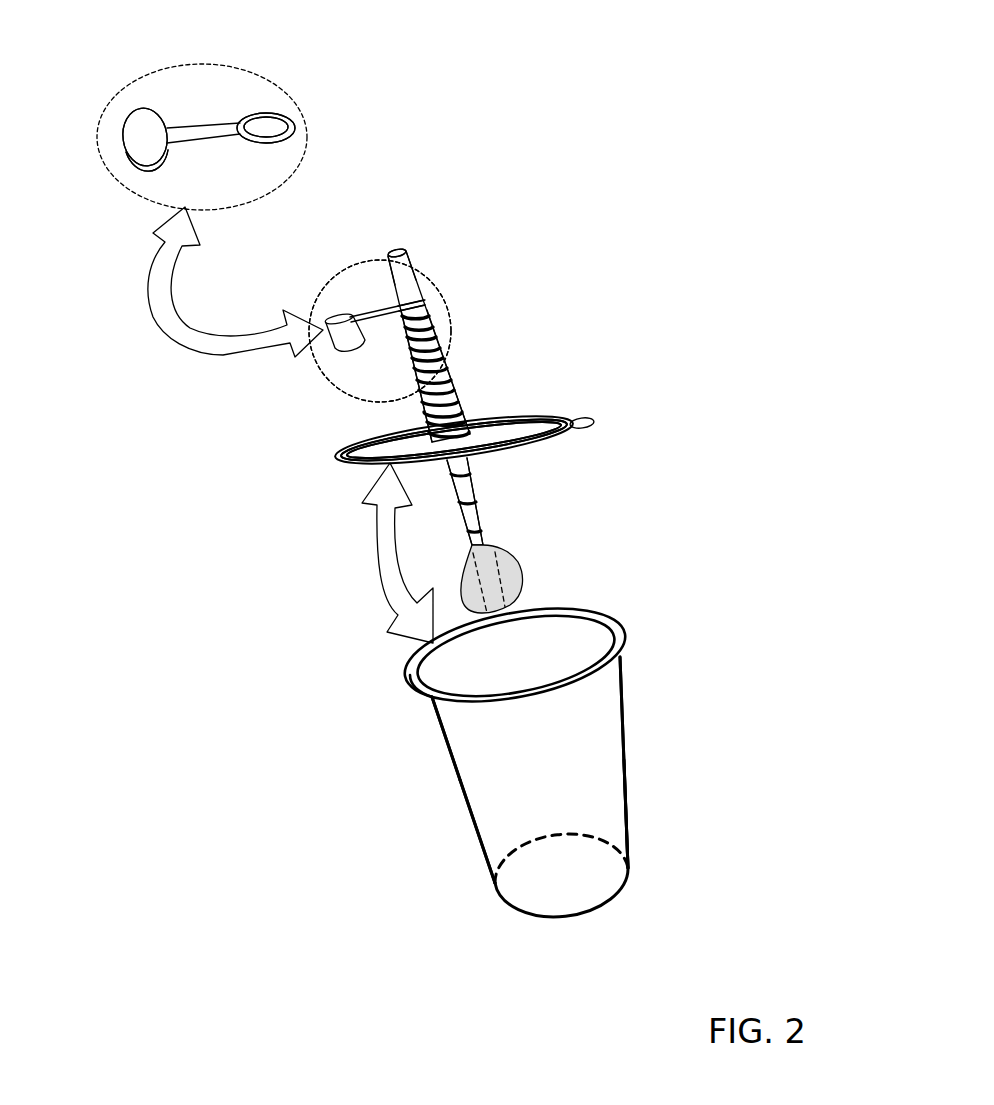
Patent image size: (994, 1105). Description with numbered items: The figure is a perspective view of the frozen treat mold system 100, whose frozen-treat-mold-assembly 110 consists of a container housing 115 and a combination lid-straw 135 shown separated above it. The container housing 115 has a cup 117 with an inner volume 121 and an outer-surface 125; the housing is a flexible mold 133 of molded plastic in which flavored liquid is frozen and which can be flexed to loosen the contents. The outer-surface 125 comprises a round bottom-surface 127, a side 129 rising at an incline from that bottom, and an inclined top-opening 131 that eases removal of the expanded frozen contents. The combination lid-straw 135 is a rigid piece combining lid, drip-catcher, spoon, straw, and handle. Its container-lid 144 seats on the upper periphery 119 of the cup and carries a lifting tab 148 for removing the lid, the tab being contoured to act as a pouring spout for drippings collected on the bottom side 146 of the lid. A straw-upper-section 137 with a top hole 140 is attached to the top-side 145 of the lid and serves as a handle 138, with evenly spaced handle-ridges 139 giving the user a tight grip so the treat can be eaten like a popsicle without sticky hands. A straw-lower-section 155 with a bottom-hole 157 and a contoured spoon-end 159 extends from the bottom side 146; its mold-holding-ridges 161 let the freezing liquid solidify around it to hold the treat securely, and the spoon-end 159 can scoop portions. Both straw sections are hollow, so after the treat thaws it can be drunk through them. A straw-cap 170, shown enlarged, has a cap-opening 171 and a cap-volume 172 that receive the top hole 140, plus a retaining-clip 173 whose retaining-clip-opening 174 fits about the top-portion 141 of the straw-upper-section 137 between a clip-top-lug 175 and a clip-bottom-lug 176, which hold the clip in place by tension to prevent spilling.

The frozen treat mold system 100 is at (692, 147).
The frozen-treat-mold-assembly 110 is at (716, 190).
The container housing 115 is at (627, 688).
The cup 117 is at (627, 733).
The upper periphery 119 is at (633, 640).
The inner volume 121 is at (457, 682).
The outer-surface 125 is at (630, 787).
The round bottom-surface 127 is at (597, 892).
The side 129 is at (452, 768).
The top-opening 131 is at (413, 657).
The flexible mold 133 is at (475, 832).
The combination lid-straw 135 is at (480, 415).
The straw-upper-section 137 is at (440, 328).
The handle 138 is at (402, 373).
The handle-ridges 139 is at (452, 355).
The top hole 140 is at (397, 247).
The top-portion 141 is at (415, 258).
The container-lid 144 is at (557, 443).
The top-side 145 is at (423, 440).
The bottom side 146 is at (520, 452).
The lifting tab 148 is at (585, 412).
The straw-lower-section 155 is at (477, 478).
The bottom-hole 157 is at (510, 608).
The spoon-end 159 is at (527, 587).
The mold-holding-ridges 161 is at (483, 497).
The straw-cap 170 is at (122, 132).
The cap-opening 171 is at (154, 107).
The cap-volume 172 is at (141, 126).
The retaining-clip 173 is at (276, 108).
The retaining-clip-opening 174 is at (297, 126).
The clip-top-lug 175 is at (428, 287).
The clip-bottom-lug 176 is at (432, 303).